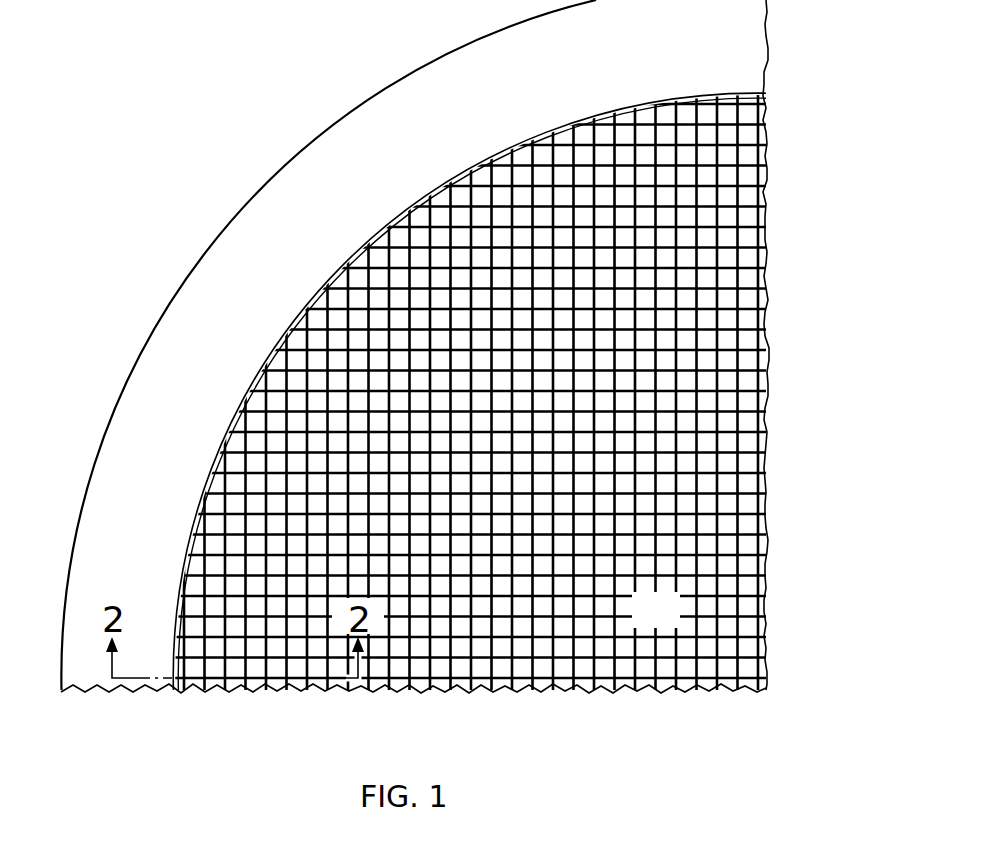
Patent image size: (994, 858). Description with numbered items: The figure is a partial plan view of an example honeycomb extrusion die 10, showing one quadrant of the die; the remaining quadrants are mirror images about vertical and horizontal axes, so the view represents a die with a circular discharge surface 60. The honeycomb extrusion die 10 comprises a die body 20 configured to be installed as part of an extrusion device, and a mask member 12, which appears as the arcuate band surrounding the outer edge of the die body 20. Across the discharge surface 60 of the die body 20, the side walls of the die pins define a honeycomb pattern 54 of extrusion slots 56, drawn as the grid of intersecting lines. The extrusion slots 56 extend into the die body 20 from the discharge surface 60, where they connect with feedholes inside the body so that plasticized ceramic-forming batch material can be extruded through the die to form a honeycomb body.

The honeycomb extrusion die 10 is at (455, 346).
The mask member 12 is at (149, 360).
The die body 20 is at (510, 346).
The honeycomb pattern 54 is at (746, 259).
The extrusion slots 56 is at (745, 512).
The discharge surface 60 is at (672, 620).